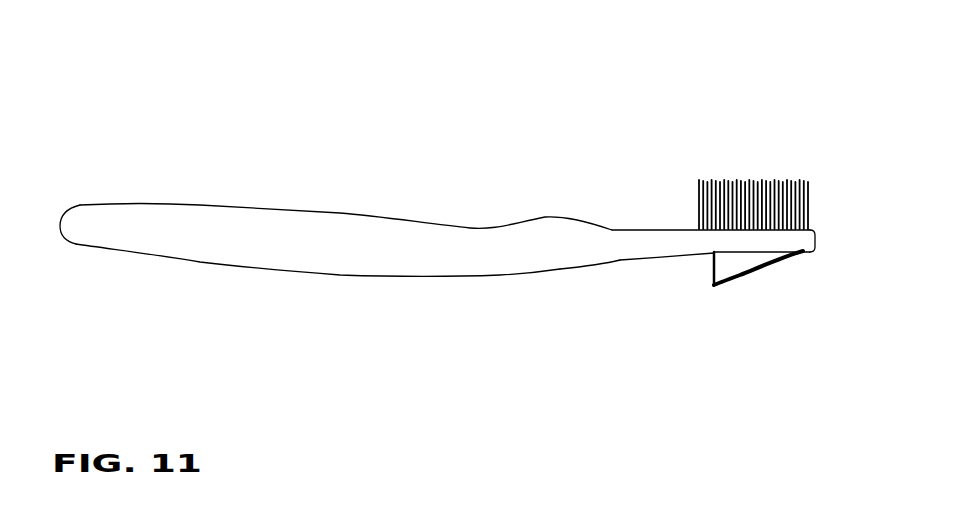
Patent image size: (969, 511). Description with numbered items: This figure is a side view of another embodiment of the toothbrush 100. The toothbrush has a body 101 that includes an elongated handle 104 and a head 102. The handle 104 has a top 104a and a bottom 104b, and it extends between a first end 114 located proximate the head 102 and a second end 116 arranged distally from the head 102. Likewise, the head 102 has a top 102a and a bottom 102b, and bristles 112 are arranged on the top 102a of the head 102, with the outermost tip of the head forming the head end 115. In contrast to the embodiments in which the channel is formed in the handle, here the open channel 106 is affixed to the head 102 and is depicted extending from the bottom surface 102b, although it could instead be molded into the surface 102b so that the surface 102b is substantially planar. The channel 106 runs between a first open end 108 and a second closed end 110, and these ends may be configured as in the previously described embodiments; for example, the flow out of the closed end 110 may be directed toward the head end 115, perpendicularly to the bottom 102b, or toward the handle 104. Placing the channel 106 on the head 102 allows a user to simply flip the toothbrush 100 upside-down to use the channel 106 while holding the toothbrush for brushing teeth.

The toothbrush 100 is at (502, 80).
The body 101 is at (788, 405).
The head 102 is at (808, 343).
The top of the head 102a is at (672, 229).
The bottom of the head 102b is at (670, 258).
The handle 104 is at (603, 342).
The top of the handle 104a is at (344, 212).
The bottom of the handle 104b is at (317, 273).
The open channel 106 is at (763, 270).
The first open end 108 is at (800, 258).
The second closed end 110 is at (713, 290).
The bristles 112 is at (766, 180).
The first end of the handle 114 is at (592, 265).
The head end 115 is at (817, 239).
The second end of the handle 116 is at (62, 202).